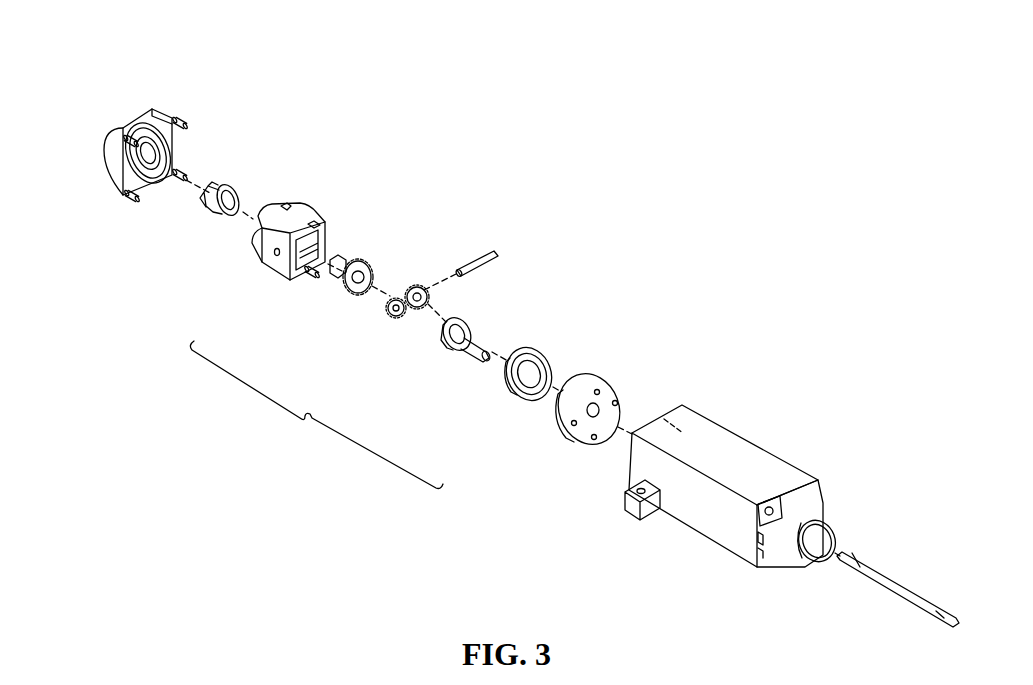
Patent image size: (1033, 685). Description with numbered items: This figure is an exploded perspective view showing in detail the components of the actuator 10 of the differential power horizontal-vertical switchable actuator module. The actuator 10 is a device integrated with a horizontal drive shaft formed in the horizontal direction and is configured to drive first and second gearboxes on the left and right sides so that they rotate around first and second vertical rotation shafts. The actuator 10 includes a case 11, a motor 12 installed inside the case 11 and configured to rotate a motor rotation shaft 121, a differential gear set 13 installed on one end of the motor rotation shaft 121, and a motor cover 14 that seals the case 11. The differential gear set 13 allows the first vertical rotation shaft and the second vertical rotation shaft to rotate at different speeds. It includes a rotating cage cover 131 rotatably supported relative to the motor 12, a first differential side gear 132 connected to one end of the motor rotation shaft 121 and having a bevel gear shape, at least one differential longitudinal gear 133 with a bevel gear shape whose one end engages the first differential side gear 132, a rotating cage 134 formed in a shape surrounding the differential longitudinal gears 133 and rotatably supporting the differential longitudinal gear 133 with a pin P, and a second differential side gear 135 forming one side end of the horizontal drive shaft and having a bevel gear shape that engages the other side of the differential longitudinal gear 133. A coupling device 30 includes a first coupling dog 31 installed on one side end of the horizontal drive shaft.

The actuator 10 is at (644, 151).
The case 11 is at (729, 443).
The motor 12 is at (661, 417).
The motor rotation shaft 121 is at (900, 586).
The differential gear set 13 is at (316, 415).
The rotating cage cover 131 is at (560, 427).
The first differential side gear 132 is at (443, 338).
The differential longitudinal gear 133 is at (418, 317).
The rotating cage 134 is at (273, 263).
The second differential side gear 135 is at (337, 290).
The motor cover 14 is at (108, 182).
The coupling device 30 is at (290, 100).
The first coupling dog 31 is at (229, 183).
The pin P is at (482, 256).